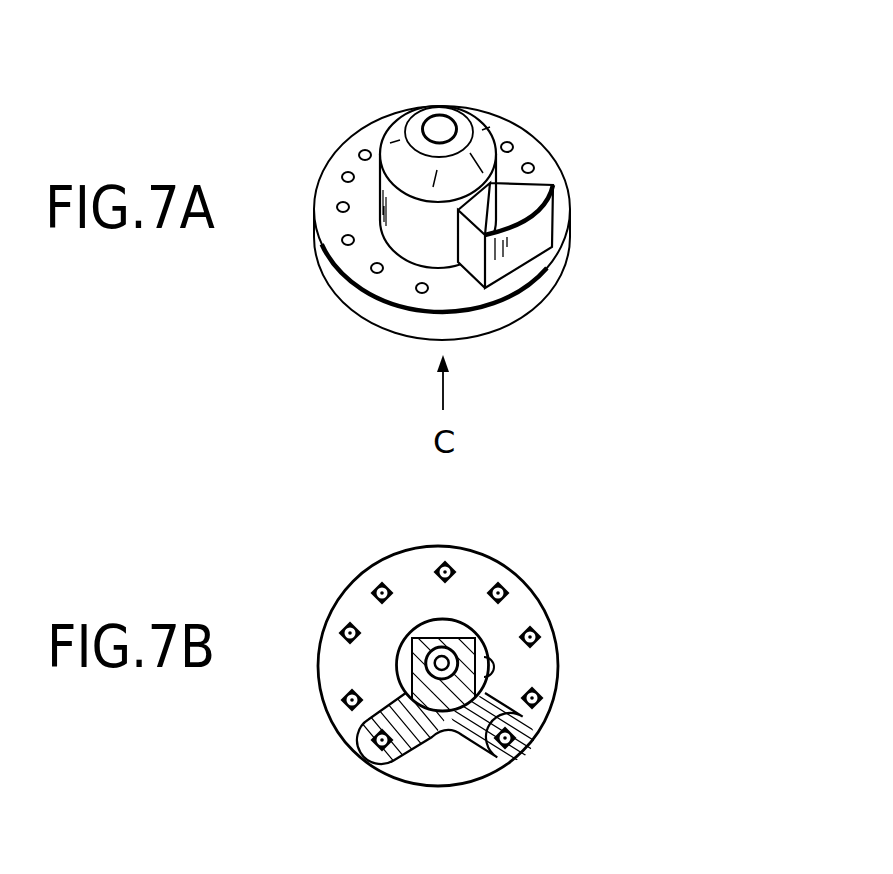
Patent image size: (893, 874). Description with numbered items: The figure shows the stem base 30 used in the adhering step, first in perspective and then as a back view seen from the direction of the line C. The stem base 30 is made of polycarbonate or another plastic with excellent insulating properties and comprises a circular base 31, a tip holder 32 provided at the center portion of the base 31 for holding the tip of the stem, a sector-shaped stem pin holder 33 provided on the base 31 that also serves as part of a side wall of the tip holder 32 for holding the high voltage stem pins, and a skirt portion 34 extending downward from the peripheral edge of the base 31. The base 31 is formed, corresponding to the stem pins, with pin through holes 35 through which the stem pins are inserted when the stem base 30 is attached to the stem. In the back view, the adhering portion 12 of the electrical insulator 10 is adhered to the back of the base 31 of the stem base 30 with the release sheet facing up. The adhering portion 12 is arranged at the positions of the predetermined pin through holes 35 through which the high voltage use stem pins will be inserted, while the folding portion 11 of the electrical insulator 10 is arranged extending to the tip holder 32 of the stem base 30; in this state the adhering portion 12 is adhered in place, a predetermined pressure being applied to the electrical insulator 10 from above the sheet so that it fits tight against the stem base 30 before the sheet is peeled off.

In FIG. 7A, the stem base 30 is at (531, 203).
In FIG. 7B, the stem base 30 is at (446, 680).
In FIG. 7A, the base 31 is at (533, 157).
In FIG. 7B, the base 31 is at (548, 608).
In FIG. 7A, the tip holder 32 is at (480, 128).
In FIG. 7B, the tip holder 32 is at (488, 666).
In FIG. 7A, the stem pin holder 33 is at (540, 225).
In FIG. 7A, the skirt portion 34 is at (545, 276).
In FIG. 7A, the pin through holes 35 is at (365, 150).
In FIG. 7B, the pin through holes 35 is at (508, 590).
In FIG. 7B, the electrical insulator 10 is at (380, 766).
In FIG. 7B, the folding portion 11 is at (426, 663).
In FIG. 7B, the adhering portion 12 is at (474, 750).